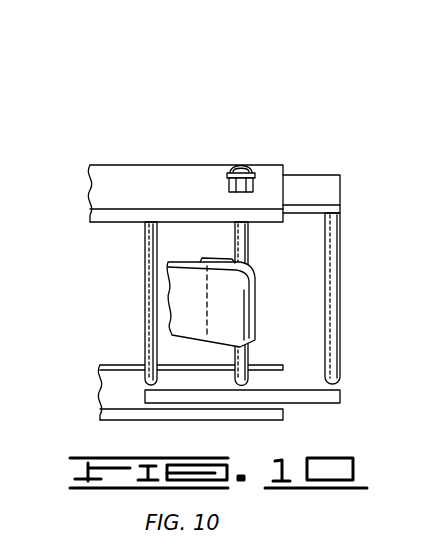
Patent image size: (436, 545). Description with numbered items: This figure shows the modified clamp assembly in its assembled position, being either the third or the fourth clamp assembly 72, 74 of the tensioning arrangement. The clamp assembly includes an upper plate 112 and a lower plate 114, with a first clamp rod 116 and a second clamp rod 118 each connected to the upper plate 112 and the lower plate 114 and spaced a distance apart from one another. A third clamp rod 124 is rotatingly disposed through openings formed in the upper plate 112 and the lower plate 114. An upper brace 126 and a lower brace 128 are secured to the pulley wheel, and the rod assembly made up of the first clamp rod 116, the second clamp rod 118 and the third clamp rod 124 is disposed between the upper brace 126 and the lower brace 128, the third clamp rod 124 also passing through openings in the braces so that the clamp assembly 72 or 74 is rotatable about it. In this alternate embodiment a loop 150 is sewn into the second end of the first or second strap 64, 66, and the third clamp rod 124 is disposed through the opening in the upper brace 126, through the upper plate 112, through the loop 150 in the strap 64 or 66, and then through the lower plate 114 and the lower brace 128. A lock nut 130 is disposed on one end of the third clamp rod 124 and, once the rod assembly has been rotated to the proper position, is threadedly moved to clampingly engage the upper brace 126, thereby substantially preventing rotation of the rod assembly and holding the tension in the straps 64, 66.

The third clamp assembly 72 is at (146, 151).
The fourth clamp assembly 74 is at (142, 130).
The upper brace 126 is at (178, 150).
The lower brace 128 is at (110, 388).
The upper plate 112 is at (318, 186).
The lower plate 114 is at (307, 390).
The first clamp rod 116 is at (146, 310).
The second clamp rod 118 is at (330, 278).
The third clamp rod 124 is at (252, 240).
The lock nut 130 is at (247, 165).
The first strap 64 is at (168, 302).
The second strap 66 is at (168, 302).
The loop 150 is at (256, 276).